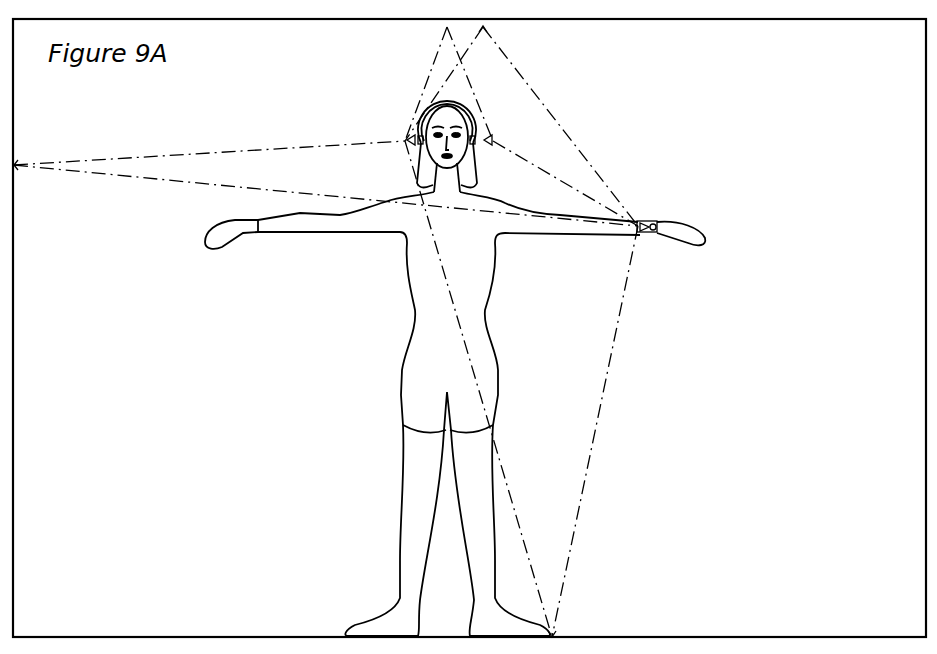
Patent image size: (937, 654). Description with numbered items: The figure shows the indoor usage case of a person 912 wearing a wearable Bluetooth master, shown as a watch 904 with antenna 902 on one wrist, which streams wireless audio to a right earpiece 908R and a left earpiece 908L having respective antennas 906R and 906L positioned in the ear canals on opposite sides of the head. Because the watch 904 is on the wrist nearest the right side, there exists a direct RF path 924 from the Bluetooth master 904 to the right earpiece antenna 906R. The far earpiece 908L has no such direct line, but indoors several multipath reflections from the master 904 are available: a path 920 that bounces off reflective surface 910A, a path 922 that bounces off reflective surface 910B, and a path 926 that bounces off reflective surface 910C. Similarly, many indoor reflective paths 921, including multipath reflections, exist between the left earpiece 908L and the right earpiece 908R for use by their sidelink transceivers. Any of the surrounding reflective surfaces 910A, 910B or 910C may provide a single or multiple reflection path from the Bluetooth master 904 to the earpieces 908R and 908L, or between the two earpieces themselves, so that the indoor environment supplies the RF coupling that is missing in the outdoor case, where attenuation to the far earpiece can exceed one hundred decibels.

The antenna 902 is at (653, 222).
The watch 904 is at (641, 221).
The antenna 906L is at (407, 140).
The antenna 906R is at (492, 140).
The earpiece 908L is at (420, 130).
The earpiece 908R is at (473, 130).
The reflective surface 910A is at (485, 29).
The reflective surface 910B is at (566, 636).
The reflective surface 910C is at (15, 163).
The user body 912 is at (405, 343).
The path 920 is at (493, 50).
The indoor reflective paths 921 is at (448, 40).
The path 922 is at (527, 525).
The direct RF path 924 is at (567, 183).
The path 926 is at (197, 163).